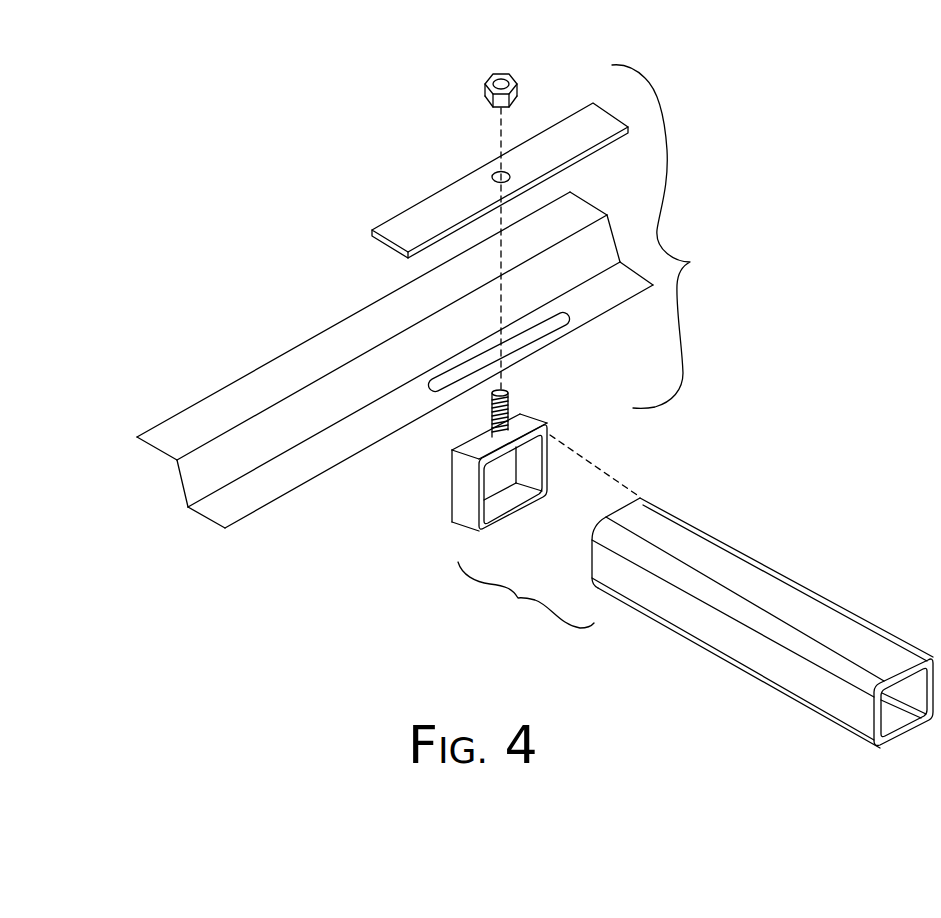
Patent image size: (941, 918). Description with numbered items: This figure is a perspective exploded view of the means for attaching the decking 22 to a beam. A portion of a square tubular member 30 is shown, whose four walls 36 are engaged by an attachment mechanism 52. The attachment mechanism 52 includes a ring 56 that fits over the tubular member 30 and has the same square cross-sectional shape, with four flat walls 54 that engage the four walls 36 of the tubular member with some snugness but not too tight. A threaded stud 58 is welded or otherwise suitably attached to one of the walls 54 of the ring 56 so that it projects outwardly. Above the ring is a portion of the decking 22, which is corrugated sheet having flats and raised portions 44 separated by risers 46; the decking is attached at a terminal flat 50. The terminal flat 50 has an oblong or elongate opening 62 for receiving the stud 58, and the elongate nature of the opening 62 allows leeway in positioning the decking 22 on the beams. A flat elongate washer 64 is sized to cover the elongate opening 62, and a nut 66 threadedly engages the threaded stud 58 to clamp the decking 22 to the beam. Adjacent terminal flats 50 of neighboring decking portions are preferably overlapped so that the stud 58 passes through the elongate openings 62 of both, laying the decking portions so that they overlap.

The decking 22 is at (379, 393).
The raised portions 44 is at (300, 355).
The risers 46 is at (180, 485).
The terminal flat 50 is at (233, 512).
The elongate opening 62 is at (558, 325).
The flat elongate washer 64 is at (400, 213).
The nut 66 is at (485, 101).
The attachment mechanism 52 is at (482, 472).
The flat walls 54 is at (458, 481).
The ring 56 is at (528, 417).
The threaded stud 58 is at (487, 424).
The tubular member 30 is at (762, 623).
The walls 36 is at (838, 635).